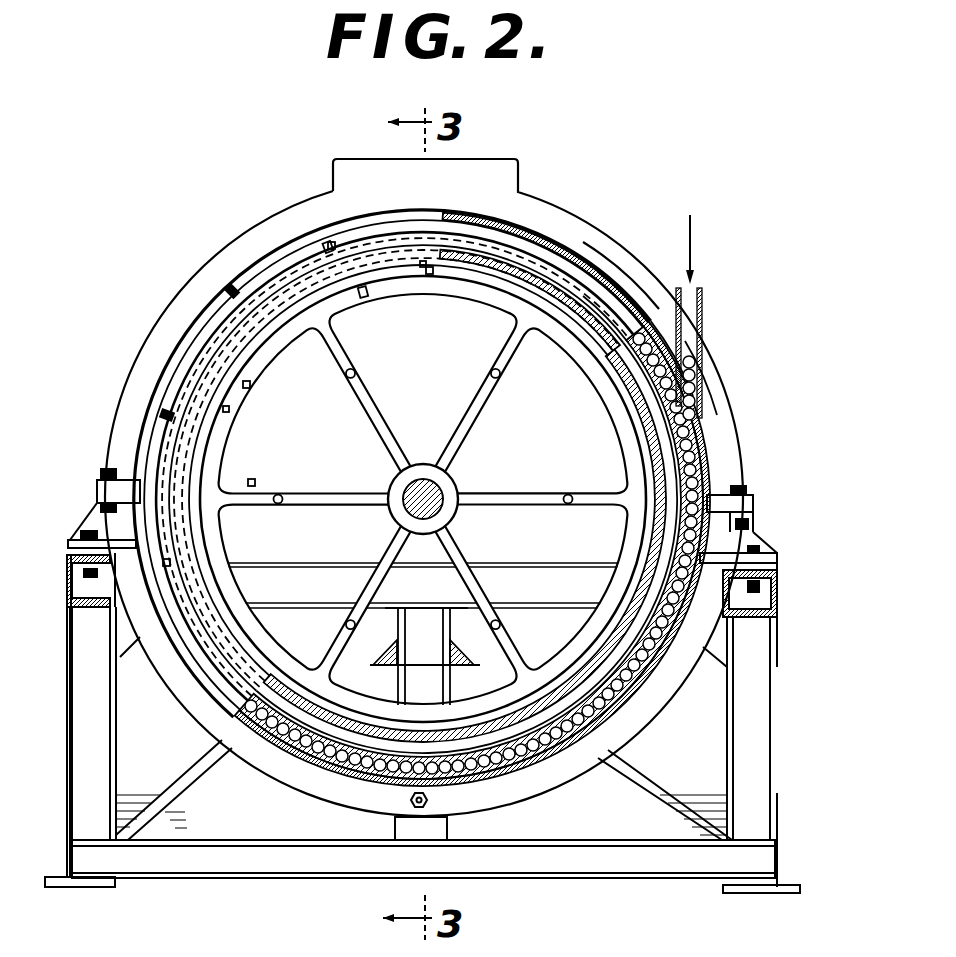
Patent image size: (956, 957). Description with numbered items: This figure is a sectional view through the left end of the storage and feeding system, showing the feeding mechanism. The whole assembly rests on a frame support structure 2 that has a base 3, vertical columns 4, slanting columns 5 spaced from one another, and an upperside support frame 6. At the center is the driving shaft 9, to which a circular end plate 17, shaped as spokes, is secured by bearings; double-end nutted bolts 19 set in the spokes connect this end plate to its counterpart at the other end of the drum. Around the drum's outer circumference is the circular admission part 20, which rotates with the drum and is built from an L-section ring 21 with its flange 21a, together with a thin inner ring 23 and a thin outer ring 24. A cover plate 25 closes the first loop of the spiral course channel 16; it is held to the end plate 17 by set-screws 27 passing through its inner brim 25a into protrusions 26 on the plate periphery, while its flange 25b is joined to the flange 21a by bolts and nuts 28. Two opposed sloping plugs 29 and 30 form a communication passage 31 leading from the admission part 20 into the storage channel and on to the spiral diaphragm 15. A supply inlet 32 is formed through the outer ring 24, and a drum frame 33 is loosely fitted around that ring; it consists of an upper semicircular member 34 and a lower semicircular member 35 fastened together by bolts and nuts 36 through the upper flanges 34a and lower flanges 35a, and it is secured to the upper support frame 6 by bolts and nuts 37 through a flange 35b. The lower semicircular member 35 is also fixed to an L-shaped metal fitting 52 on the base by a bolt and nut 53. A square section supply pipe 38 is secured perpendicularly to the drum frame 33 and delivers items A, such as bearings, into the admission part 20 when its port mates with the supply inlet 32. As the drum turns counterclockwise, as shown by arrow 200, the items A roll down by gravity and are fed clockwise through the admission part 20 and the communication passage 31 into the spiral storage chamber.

The frame support structure 2 is at (780, 702).
The base 3 is at (583, 840).
The vertical columns 4 is at (422, 721).
The slanting columns 5 is at (650, 782).
The upperside support frame 6 is at (766, 594).
The driving shaft 9 is at (423, 469).
The spiral diaphragm 15 is at (423, 499).
The spiral course channel 16 is at (666, 349).
The circular end plate 17 is at (423, 499).
The double-end nutted bolts 19 is at (423, 491).
The circular admission part 20 is at (465, 579).
The L-section ring 21 is at (392, 443).
The flange of L-section ring 21a is at (393, 458).
The thin inner ring 23 is at (466, 469).
The thin outer ring 24 is at (472, 477).
The cover plate 25 is at (394, 466).
The inner brim of cover plate 25a is at (372, 307).
The flange of cover plate 25b is at (343, 223).
The protrusions 26 is at (433, 510).
The set-screws 27 is at (336, 347).
The bolts and nuts 28 is at (186, 338).
The sloping plug 29 is at (603, 282).
The sloping plug 30 is at (530, 300).
The communication passage 31 is at (594, 267).
The supply inlet 32 is at (727, 382).
The drum frame 33 is at (560, 186).
The upper semicircular member 34 is at (621, 254).
The upper flange 34a is at (737, 482).
The lower semicircular member 35 is at (655, 708).
The lower flange 35a is at (753, 508).
The flange 35b is at (760, 550).
The bolts and nuts 36 is at (748, 490).
The bolts and nuts 37 is at (747, 549).
The square section supply pipe 38 is at (698, 312).
The L-shaped metal fitting 52 is at (426, 838).
The bolt and nut 53 is at (428, 800).
The arrow 200 is at (396, 468).
The items A is at (700, 378).